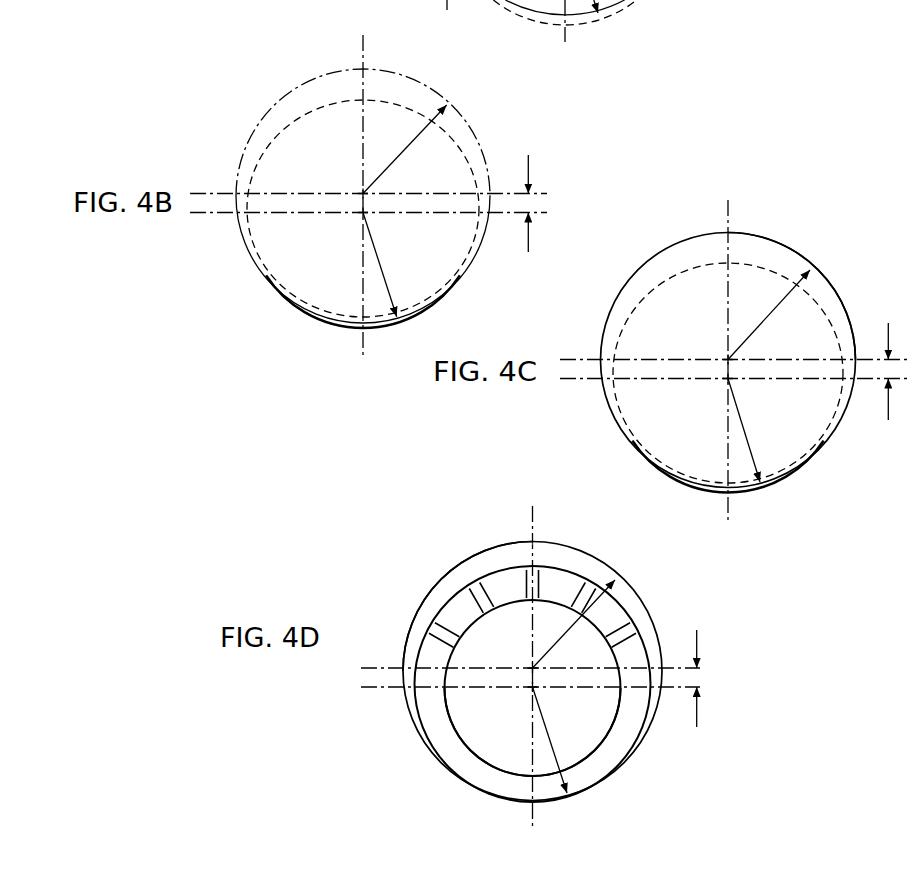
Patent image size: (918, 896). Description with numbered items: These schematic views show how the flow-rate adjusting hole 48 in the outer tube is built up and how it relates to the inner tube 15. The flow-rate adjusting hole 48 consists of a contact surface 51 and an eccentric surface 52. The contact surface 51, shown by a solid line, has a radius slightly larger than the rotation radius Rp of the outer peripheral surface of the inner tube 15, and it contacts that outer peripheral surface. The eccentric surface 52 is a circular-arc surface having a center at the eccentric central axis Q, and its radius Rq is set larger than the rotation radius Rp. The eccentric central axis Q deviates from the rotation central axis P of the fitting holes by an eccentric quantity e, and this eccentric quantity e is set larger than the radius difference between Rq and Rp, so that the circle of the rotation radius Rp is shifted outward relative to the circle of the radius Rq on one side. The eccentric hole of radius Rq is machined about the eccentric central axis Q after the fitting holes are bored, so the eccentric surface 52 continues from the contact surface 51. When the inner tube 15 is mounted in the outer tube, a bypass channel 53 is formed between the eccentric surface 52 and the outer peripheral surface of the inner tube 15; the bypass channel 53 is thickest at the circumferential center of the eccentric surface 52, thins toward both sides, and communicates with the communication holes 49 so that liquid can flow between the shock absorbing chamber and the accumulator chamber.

In FIG. 4D, the inner tube 15 is at (440, 730).
In FIG. 4C, the flow-rate adjusting hole 48 is at (833, 295).
In FIG. 4D, the flow-rate adjusting hole 48 is at (407, 694).
In FIG. 4D, the communication holes 49 is at (473, 590).
In FIG. 4B, the contact surface 51 is at (304, 300).
In FIG. 4C, the contact surface 51 is at (740, 498).
In FIG. 4D, the contact surface 51 is at (590, 786).
In FIG. 4C, the eccentric surface 52 is at (792, 254).
In FIG. 4D, the eccentric surface 52 is at (417, 616).
In FIG. 4D, the bypass channel 53 is at (498, 560).
In FIG. 4B, the eccentric central axis Q is at (363, 194).
In FIG. 4C, the eccentric central axis Q is at (728, 360).
In FIG. 4D, the eccentric central axis Q is at (532, 668).
In FIG. 4B, the rotation central axis P is at (363, 212).
In FIG. 4C, the rotation central axis P is at (728, 378).
In FIG. 4D, the rotation central axis P is at (532, 687).
In FIG. 4B, the radius of the eccentric surface Rq is at (400, 150).
In FIG. 4C, the radius of the eccentric surface Rq is at (762, 313).
In FIG. 4D, the radius of the eccentric surface Rq is at (553, 733).
In FIG. 4B, the rotation radius Rp is at (380, 260).
In FIG. 4C, the rotation radius Rp is at (745, 427).
In FIG. 4D, the rotation radius Rp is at (573, 627).
In FIG. 4B, the eccentric quantity e is at (539, 203).
In FIG. 4C, the eccentric quantity e is at (899, 371).
In FIG. 4D, the eccentric quantity e is at (708, 678).